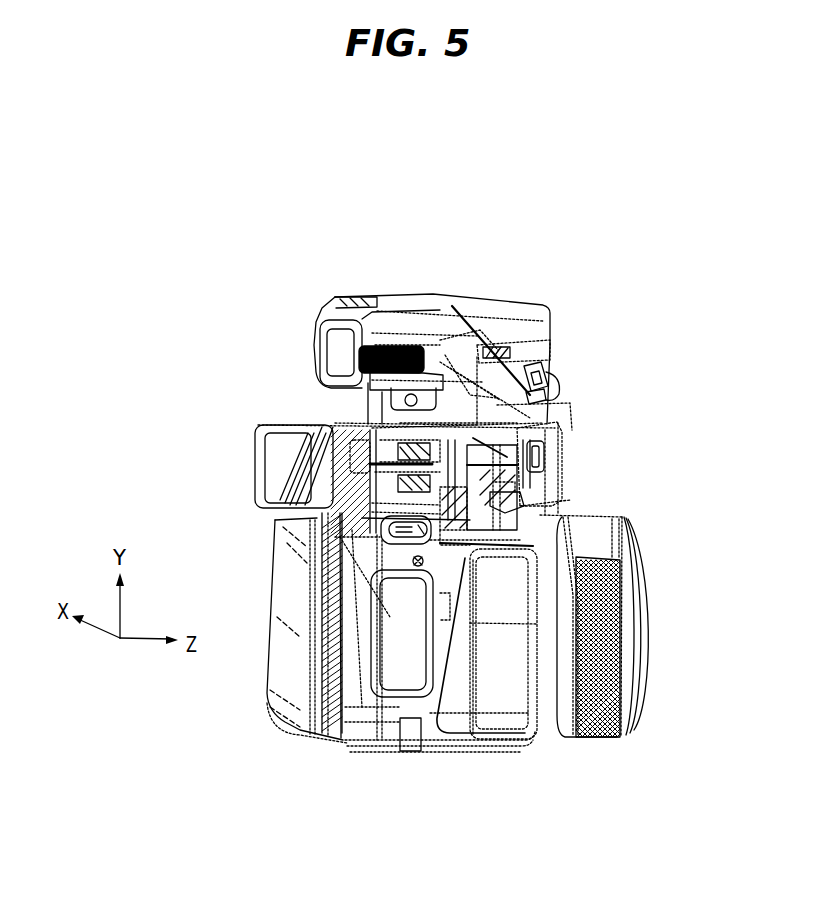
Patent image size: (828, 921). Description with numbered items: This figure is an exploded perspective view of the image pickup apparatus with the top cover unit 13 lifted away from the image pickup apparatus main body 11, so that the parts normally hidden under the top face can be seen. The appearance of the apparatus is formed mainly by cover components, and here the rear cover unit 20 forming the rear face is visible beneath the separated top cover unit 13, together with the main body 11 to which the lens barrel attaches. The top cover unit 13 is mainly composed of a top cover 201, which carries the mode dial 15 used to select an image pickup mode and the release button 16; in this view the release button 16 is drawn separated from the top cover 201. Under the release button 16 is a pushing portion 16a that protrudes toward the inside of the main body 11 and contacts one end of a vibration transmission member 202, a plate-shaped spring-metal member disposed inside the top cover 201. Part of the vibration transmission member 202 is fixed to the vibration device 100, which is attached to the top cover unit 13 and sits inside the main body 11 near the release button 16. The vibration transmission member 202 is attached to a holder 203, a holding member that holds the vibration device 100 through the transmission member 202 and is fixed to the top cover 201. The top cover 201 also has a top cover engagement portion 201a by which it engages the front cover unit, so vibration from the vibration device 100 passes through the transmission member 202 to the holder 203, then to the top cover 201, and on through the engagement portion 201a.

The top cover unit 13 is at (312, 292).
The mode dial 15 is at (365, 350).
The vibration device 100 is at (450, 444).
The release button 16 is at (528, 373).
The pushing portion 16a is at (529, 410).
The top cover 201 is at (535, 414).
The vibration transmission member 202 is at (483, 443).
The top cover engagement portion 201a is at (532, 492).
The holder 203 is at (525, 496).
The rear cover unit 20 is at (345, 695).
The image pickup apparatus main body 11 is at (505, 670).